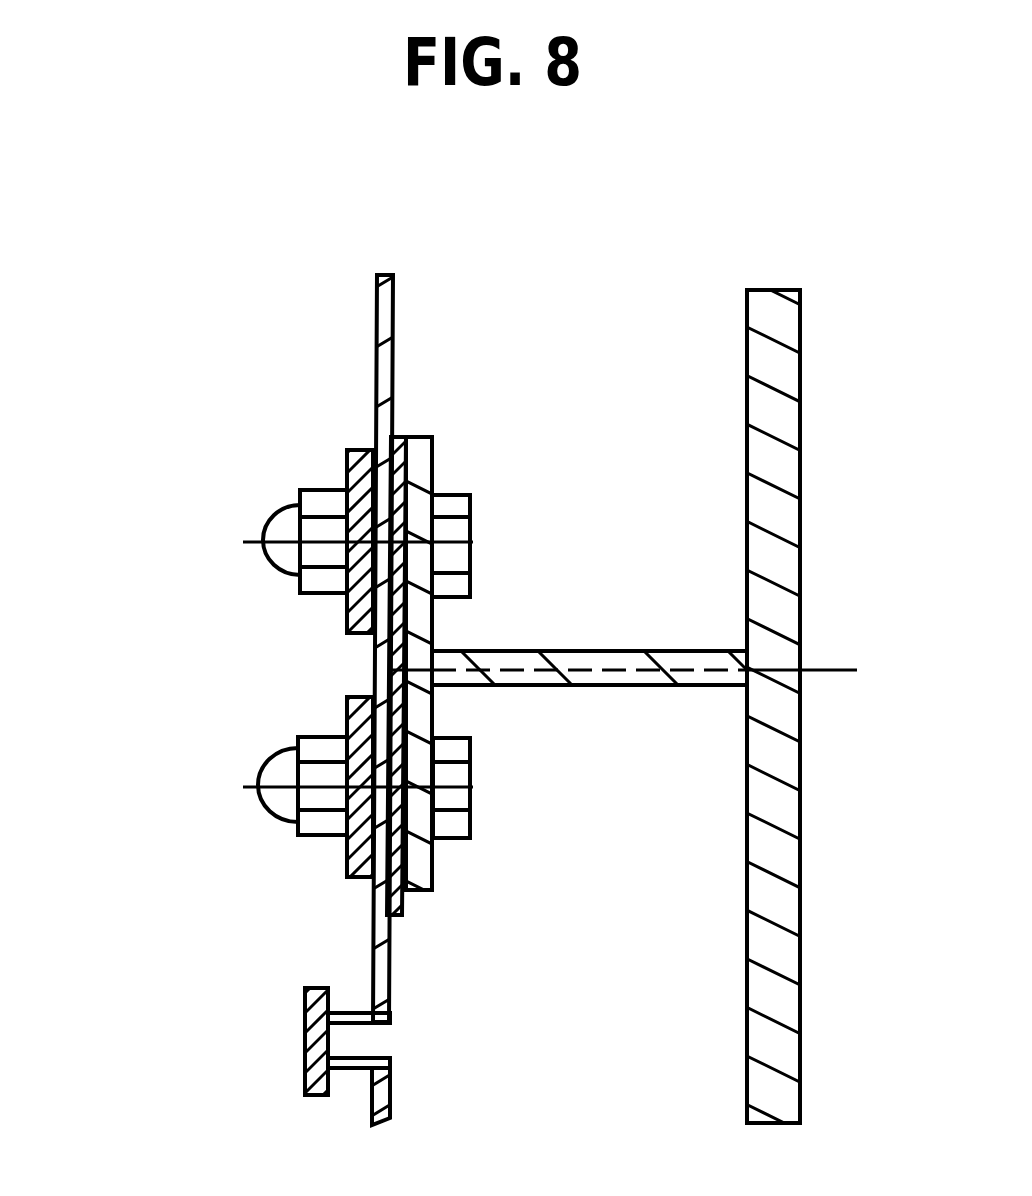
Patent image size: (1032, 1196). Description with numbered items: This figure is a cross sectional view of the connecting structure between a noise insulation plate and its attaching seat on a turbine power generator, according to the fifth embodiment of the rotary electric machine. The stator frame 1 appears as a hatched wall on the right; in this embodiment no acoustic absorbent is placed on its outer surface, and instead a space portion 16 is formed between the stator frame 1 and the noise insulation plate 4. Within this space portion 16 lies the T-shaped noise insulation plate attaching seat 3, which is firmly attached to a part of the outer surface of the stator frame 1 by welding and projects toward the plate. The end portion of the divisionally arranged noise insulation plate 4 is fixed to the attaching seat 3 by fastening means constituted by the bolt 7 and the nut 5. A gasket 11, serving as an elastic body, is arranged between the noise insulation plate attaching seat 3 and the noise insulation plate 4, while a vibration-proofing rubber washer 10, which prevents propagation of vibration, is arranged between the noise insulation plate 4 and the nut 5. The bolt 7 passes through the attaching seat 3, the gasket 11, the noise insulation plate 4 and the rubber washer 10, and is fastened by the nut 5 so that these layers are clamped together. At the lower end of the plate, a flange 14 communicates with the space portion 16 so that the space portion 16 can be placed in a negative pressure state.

The stator frame 1 is at (770, 947).
The noise insulation plate attaching seat 3 is at (403, 667).
The noise insulation plate 4 is at (380, 375).
The nut 5 is at (283, 772).
The bolt 7 is at (458, 505).
The vibration-proofing rubber washer 10 is at (352, 718).
The gasket 11 is at (392, 893).
The flange 14 is at (318, 1065).
The space portion 16 is at (663, 357).